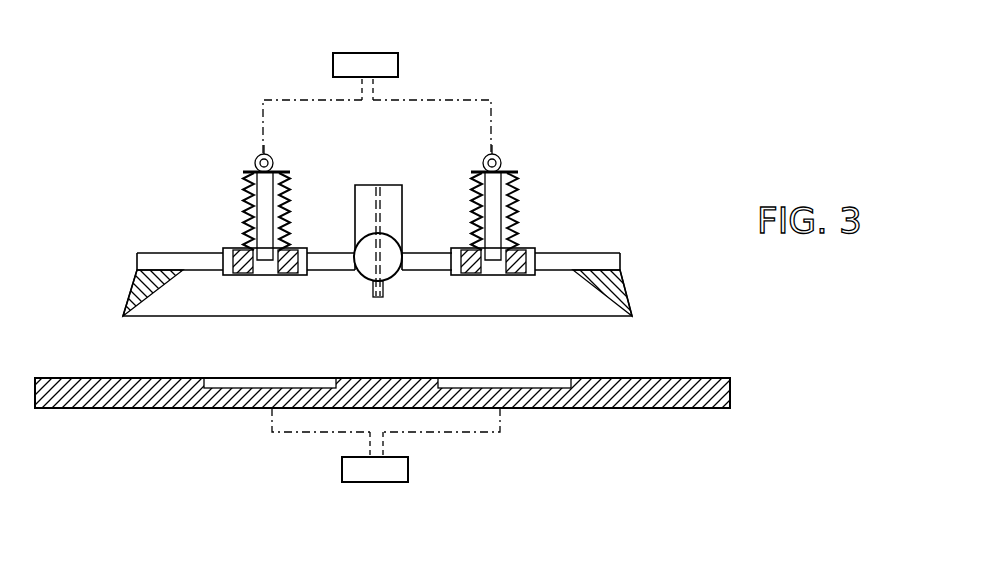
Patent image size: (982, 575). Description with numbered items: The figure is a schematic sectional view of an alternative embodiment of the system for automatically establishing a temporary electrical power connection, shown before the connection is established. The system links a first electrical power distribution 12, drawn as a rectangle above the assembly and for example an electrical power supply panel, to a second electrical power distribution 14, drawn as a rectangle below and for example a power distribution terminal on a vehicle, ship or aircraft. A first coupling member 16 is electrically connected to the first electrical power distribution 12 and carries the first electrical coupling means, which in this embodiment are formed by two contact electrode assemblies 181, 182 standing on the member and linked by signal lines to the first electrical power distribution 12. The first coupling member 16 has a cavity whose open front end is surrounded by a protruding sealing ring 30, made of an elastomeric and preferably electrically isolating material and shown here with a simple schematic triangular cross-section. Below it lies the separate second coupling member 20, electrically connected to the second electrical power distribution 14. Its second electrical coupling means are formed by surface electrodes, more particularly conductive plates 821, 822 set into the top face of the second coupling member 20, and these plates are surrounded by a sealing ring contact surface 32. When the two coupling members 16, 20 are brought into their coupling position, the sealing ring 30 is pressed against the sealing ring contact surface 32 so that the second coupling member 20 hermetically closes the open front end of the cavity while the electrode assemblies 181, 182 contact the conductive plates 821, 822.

The first electrical power distribution 12 is at (365, 67).
The second electrical power distribution 14 is at (385, 468).
The first coupling member 16 is at (628, 222).
The contact electrode assembly 181 is at (232, 193).
The contact electrode assembly 182 is at (533, 223).
The second coupling member 20 is at (668, 362).
The sealing ring 30 is at (623, 293).
The sealing ring contact surface 32 is at (136, 373).
The conductive plate 821 is at (260, 382).
The conductive plate 822 is at (520, 382).